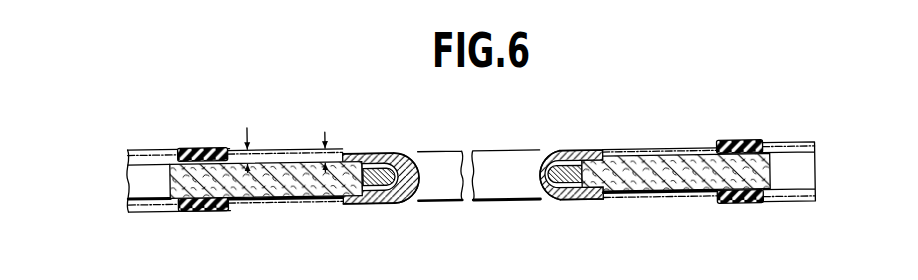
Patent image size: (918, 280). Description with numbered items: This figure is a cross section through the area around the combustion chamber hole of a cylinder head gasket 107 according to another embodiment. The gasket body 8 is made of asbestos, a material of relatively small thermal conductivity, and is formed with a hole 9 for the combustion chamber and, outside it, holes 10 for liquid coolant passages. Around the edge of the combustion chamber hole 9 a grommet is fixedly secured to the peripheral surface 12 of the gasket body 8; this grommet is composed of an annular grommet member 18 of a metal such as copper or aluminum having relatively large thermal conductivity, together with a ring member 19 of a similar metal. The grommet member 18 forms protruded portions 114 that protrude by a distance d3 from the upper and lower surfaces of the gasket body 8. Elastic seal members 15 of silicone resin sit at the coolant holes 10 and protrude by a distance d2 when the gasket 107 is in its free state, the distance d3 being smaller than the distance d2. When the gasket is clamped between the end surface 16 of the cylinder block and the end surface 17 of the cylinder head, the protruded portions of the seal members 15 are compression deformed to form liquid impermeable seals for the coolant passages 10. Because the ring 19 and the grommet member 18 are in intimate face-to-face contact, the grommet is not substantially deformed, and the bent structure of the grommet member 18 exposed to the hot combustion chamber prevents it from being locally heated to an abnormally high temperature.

The gasket body 8 is at (263, 187).
The hole for a combustion chamber 9 is at (485, 190).
The holes for liquid coolant passages 10 is at (170, 174).
The peripheral surface of the combustion chamber hole 12 is at (362, 165).
The seal members 15 is at (208, 144).
The end surface of the cylinder block 16 is at (307, 201).
The end surface of the cylinder head 17 is at (303, 150).
The grommet member 18 is at (403, 152).
The ring member 19 is at (375, 202).
The gasket 107 is at (662, 144).
The protruded portions 114 is at (387, 151).
The protrusion distance of the seal members d2 is at (262, 139).
The protrusion distance of the protruded portions d3 is at (336, 141).